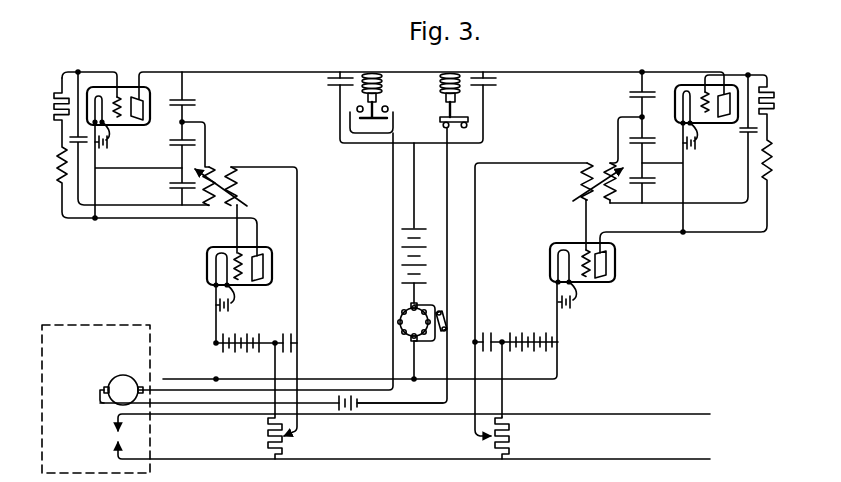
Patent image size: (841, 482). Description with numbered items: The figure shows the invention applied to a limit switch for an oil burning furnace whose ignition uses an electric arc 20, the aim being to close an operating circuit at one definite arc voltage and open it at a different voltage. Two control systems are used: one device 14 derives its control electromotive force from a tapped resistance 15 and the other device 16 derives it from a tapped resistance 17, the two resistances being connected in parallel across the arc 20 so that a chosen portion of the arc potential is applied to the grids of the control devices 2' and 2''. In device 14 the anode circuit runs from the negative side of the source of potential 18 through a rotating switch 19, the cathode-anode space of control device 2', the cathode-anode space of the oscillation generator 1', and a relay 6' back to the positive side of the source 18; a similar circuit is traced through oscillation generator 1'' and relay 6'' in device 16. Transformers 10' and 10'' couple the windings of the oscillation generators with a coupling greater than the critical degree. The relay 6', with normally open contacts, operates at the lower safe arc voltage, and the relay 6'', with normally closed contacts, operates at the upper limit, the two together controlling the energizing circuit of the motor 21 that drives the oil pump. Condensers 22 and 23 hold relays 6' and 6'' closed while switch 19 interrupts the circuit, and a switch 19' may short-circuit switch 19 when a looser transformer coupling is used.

The oscillation generator 1' is at (130, 112).
The oscillation generator 1'' is at (696, 108).
The control device 2' is at (224, 287).
The control device 2'' is at (603, 274).
The relay 6' is at (381, 92).
The relay 6'' is at (440, 101).
The transformer 10' is at (235, 173).
The transformer 10'' is at (590, 171).
The device 14 is at (240, 141).
The resistance 15 is at (268, 430).
The device 16 is at (604, 134).
The resistance 17 is at (509, 436).
The source of potential 18 is at (425, 236).
The switch 19 is at (423, 306).
The switch 19' is at (459, 313).
The arc 20 is at (112, 428).
The motor 21 is at (122, 375).
The condenser 22 is at (336, 88).
The condenser 23 is at (494, 88).